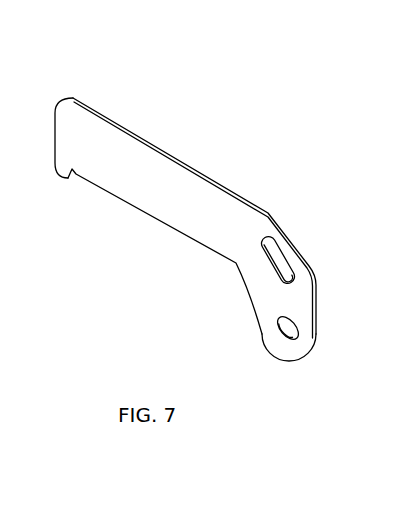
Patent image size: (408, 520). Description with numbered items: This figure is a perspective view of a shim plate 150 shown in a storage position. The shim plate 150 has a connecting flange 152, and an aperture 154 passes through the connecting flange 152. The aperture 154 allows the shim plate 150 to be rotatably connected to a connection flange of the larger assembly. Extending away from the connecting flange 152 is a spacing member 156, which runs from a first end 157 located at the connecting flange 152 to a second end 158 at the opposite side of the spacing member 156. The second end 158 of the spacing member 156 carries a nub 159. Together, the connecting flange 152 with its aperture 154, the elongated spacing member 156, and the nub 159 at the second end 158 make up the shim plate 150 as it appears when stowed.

The shim plate 150 is at (211, 89).
The connecting flange 152 is at (293, 360).
The aperture 154 is at (280, 322).
The spacing member 156 is at (143, 167).
The first end 157 is at (294, 247).
The second end 158 is at (55, 137).
The nub 159 is at (76, 178).